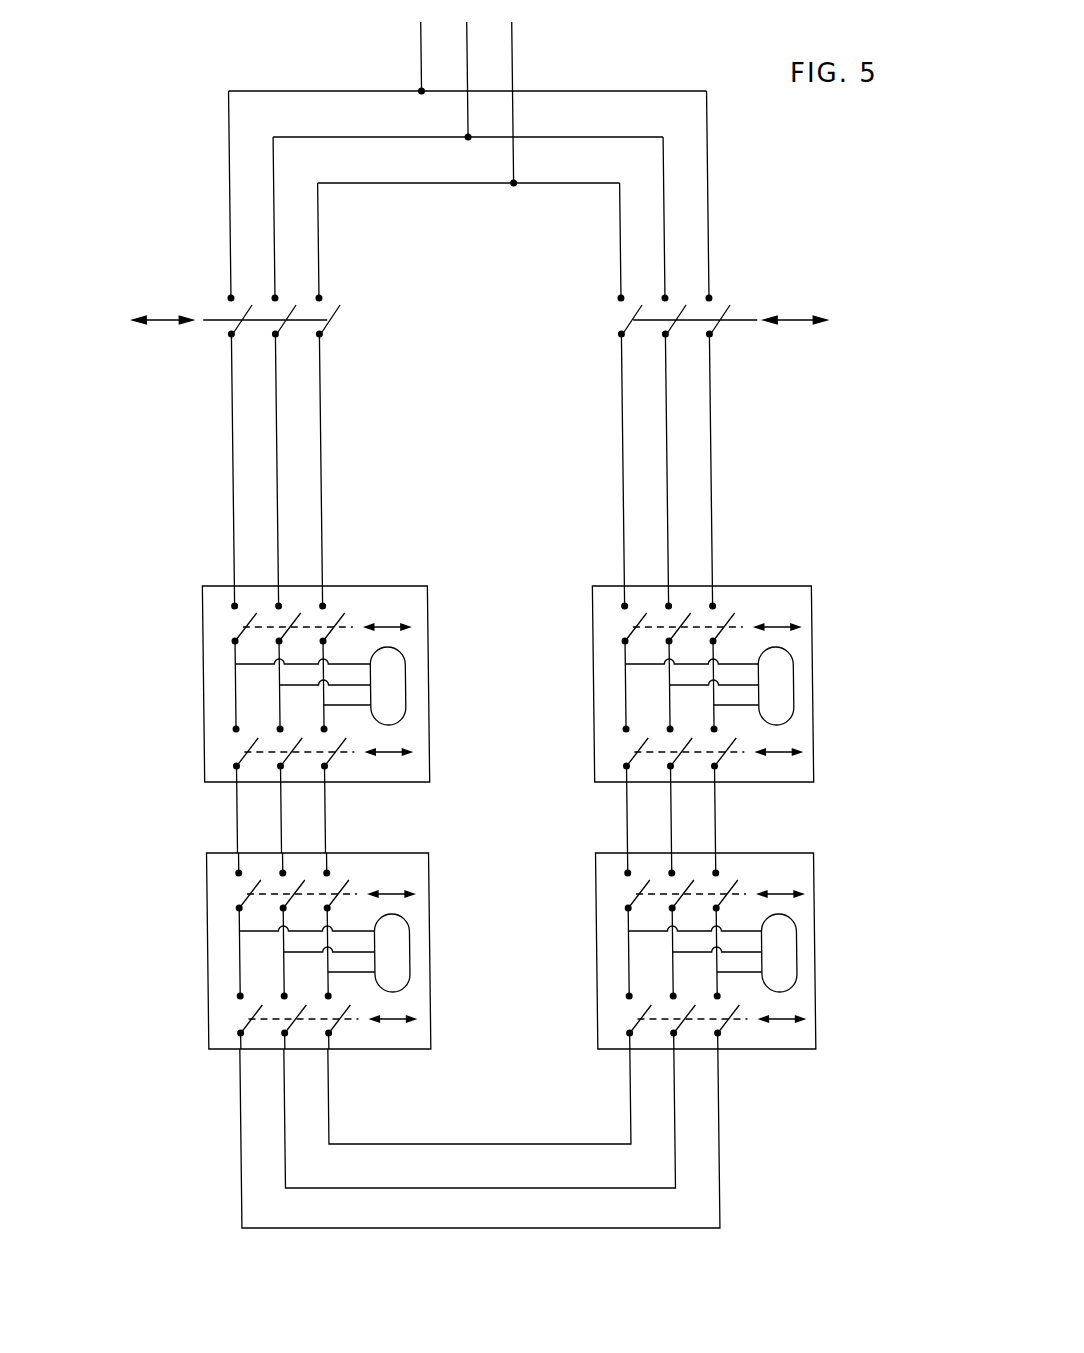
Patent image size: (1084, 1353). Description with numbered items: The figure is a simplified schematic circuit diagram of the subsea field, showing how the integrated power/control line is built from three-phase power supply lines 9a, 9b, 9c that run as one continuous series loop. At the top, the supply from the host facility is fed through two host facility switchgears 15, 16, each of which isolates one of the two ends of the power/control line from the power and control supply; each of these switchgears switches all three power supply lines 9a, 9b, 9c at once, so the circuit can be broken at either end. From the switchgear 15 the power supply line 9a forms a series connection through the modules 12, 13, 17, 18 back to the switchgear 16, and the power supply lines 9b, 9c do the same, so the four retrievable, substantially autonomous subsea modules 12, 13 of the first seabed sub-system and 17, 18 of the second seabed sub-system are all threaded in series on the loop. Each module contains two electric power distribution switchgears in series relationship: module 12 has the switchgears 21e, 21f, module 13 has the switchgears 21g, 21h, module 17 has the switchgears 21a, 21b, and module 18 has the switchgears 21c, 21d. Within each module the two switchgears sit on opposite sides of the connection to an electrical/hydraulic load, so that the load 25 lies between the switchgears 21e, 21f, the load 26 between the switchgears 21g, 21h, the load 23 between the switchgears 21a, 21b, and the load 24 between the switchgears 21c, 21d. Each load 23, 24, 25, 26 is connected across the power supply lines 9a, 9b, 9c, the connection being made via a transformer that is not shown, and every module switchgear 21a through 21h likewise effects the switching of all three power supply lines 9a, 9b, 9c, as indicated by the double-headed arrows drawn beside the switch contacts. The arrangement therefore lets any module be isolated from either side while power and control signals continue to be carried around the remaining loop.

The power supply line 9a is at (215, 519).
The power supply line 9b is at (257, 502).
The power supply line 9c is at (337, 519).
The subsea module 12 is at (298, 709).
The subsea module 13 is at (300, 976).
The switchgear 15 is at (364, 268).
The switchgear 16 is at (579, 272).
The subsea module 17 is at (687, 709).
The subsea module 18 is at (689, 979).
The electric power distribution switchgear 21a is at (745, 605).
The electric power distribution switchgear 21b is at (744, 773).
The electric power distribution switchgear 21c is at (746, 873).
The electric power distribution switchgear 21d is at (743, 1042).
The electric power distribution switchgear 21e is at (357, 605).
The electric power distribution switchgear 21f is at (356, 773).
The electric power distribution switchgear 21g is at (358, 870).
The electric power distribution switchgear 21h is at (357, 1040).
The electrical/hydraulic load 23 is at (808, 671).
The electrical/hydraulic load 24 is at (806, 937).
The electrical/hydraulic load 25 is at (422, 672).
The electrical/hydraulic load 26 is at (424, 938).